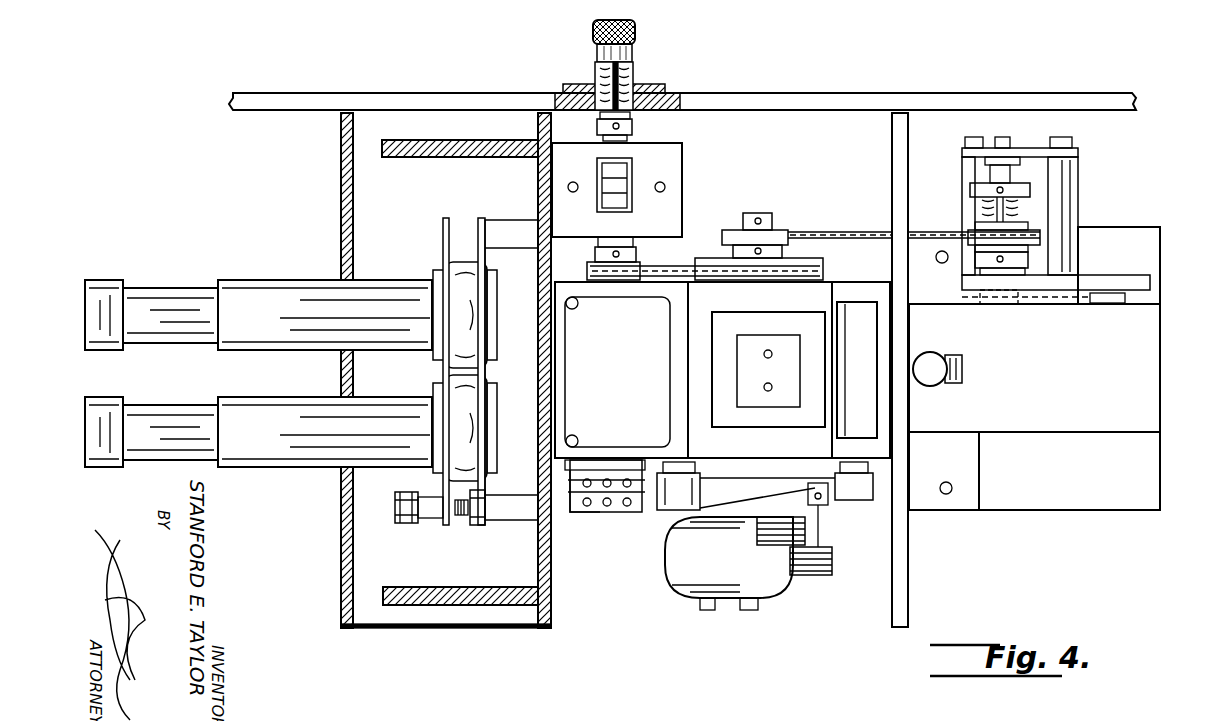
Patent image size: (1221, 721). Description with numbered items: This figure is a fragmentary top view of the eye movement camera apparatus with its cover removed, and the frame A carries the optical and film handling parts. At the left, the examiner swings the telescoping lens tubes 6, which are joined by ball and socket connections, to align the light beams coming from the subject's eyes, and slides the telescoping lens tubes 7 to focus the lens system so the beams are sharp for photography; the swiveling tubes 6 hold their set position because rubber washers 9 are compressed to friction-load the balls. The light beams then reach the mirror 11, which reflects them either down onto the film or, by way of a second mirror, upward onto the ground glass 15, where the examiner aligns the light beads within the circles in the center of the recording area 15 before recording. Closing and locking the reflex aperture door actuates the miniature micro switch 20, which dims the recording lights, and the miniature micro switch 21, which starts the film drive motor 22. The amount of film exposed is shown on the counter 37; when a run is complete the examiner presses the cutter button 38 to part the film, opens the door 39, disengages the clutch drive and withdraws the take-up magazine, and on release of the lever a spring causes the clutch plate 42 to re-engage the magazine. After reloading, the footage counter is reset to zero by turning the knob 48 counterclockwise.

The frame A is at (341, 200).
The telescoping lens tubes 6 is at (325, 373).
The telescoping lens tubes 7 is at (147, 318).
The rubber washers 9 is at (426, 510).
The mirror 11 is at (857, 370).
The ground glass 15 is at (768, 369).
The miniature micro switch 20 is at (618, 508).
The miniature micro switch 21 is at (598, 488).
The film drive motor 22 is at (815, 570).
The counter 37 is at (636, 163).
The cutter button 38 is at (940, 380).
The door 39 is at (1034, 407).
The clutch plate 42 is at (992, 306).
The knob 48 is at (637, 34).